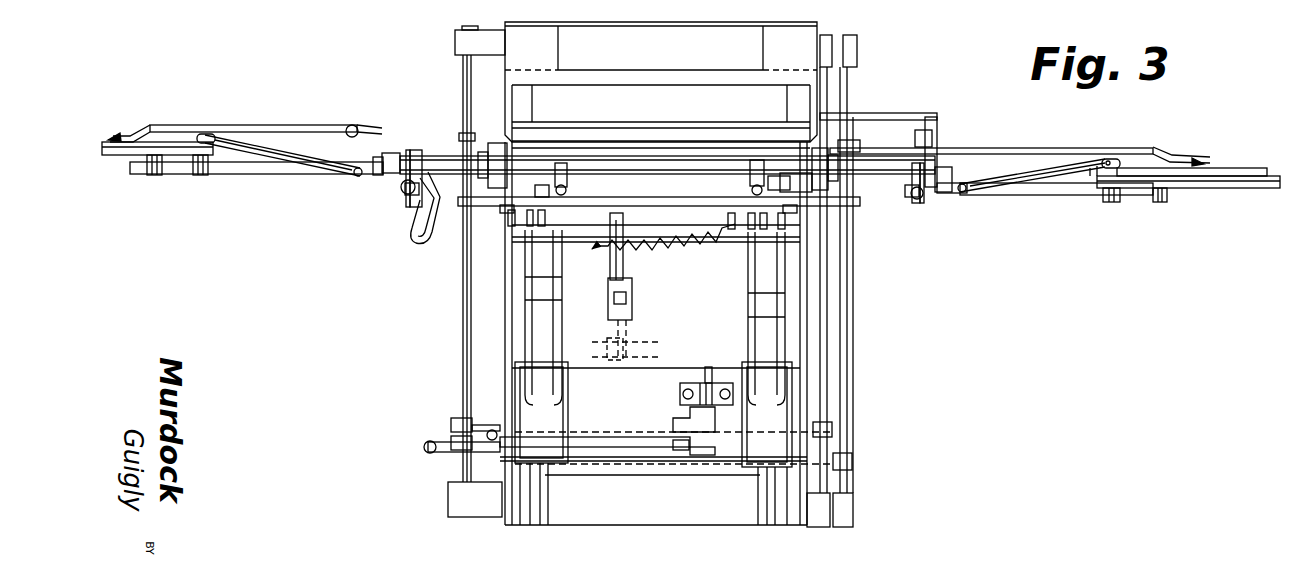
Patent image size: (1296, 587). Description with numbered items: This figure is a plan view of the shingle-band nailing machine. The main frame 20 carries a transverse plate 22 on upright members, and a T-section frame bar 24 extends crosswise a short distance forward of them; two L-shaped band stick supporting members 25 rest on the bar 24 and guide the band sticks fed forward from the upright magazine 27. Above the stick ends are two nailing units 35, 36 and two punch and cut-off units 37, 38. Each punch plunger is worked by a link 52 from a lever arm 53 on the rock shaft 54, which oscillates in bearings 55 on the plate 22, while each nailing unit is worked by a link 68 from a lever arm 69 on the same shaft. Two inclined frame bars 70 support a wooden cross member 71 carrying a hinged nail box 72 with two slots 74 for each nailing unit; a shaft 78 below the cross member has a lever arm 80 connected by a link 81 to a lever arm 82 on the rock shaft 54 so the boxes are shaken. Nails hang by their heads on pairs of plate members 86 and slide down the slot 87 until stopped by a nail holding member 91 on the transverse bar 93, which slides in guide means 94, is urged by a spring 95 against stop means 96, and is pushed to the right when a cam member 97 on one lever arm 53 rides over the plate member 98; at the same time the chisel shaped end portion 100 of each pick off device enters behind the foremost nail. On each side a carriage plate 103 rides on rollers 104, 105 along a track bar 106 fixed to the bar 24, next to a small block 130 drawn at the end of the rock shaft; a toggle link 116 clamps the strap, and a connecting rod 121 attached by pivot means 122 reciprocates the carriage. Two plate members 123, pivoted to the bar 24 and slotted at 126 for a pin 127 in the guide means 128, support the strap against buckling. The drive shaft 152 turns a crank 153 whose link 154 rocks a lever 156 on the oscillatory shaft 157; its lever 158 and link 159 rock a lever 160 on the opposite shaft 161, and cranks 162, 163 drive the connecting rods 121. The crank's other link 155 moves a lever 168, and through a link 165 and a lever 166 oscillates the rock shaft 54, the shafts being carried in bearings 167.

The main frame 20 is at (720, 524).
The plate 22 is at (632, 180).
The transverse frame bar 24 is at (425, 200).
The band stick supporting members 25 is at (531, 522).
The upright magazine 27 is at (607, 98).
The nailing unit 35 is at (753, 197).
The nailing unit 36 is at (578, 199).
The punch and cut-off unit 37 is at (931, 202).
The punch and cut-off unit 38 is at (383, 192).
The link 52 is at (408, 195).
The lever arm 53 is at (416, 150).
The rock shaft 54 is at (442, 158).
The bearings 55 is at (498, 147).
The link 68 is at (538, 195).
The lever arm 69 is at (560, 185).
The inclined frame bars 70 is at (463, 79).
The inclined cross member 71 is at (633, 369).
The nail box 72 is at (566, 433).
The slots 74 is at (653, 414).
The shaft 78 is at (640, 345).
The lever arm 80 is at (628, 312).
The link 81 is at (623, 263).
The lever arm 82 is at (615, 235).
The metal plate members 86 is at (530, 296).
The slot 87 is at (537, 299).
The nail holding member 91 is at (516, 202).
The transverse bar 93 is at (650, 212).
The guide means 94 is at (520, 228).
The spring 95 is at (675, 225).
The stop means 96 is at (817, 215).
The cam member 97 is at (415, 242).
The plate member 98 is at (417, 235).
The chisel shaped end portion 100 is at (548, 231).
The carriage plate 103 is at (118, 157).
The rollers 104 is at (204, 175).
The rollers 105 is at (157, 176).
The track bar 106 is at (240, 175).
The link 116 is at (1225, 170).
The connecting rod 121 is at (272, 125).
The pivot means 122 is at (120, 132).
The plate members 123 is at (298, 148).
The slot 126 is at (238, 138).
The pin 127 is at (1105, 160).
The guide means 128 is at (1087, 182).
The block 130 is at (390, 153).
The shaft 152 is at (707, 376).
The crank 153 is at (680, 458).
The link 154 is at (625, 440).
The link 155 is at (690, 433).
The lever 156 is at (477, 427).
The oscillatory shaft 157 is at (460, 383).
The lever 158 is at (443, 440).
The link 159 is at (610, 463).
The lever 160 is at (855, 473).
The oscillatory shaft 161 is at (848, 381).
The crank 162 is at (370, 127).
The crank 163 is at (938, 153).
The link 165 is at (920, 137).
The lever 166 is at (928, 120).
The bearings 167 is at (848, 55).
The lever 168 is at (833, 440).